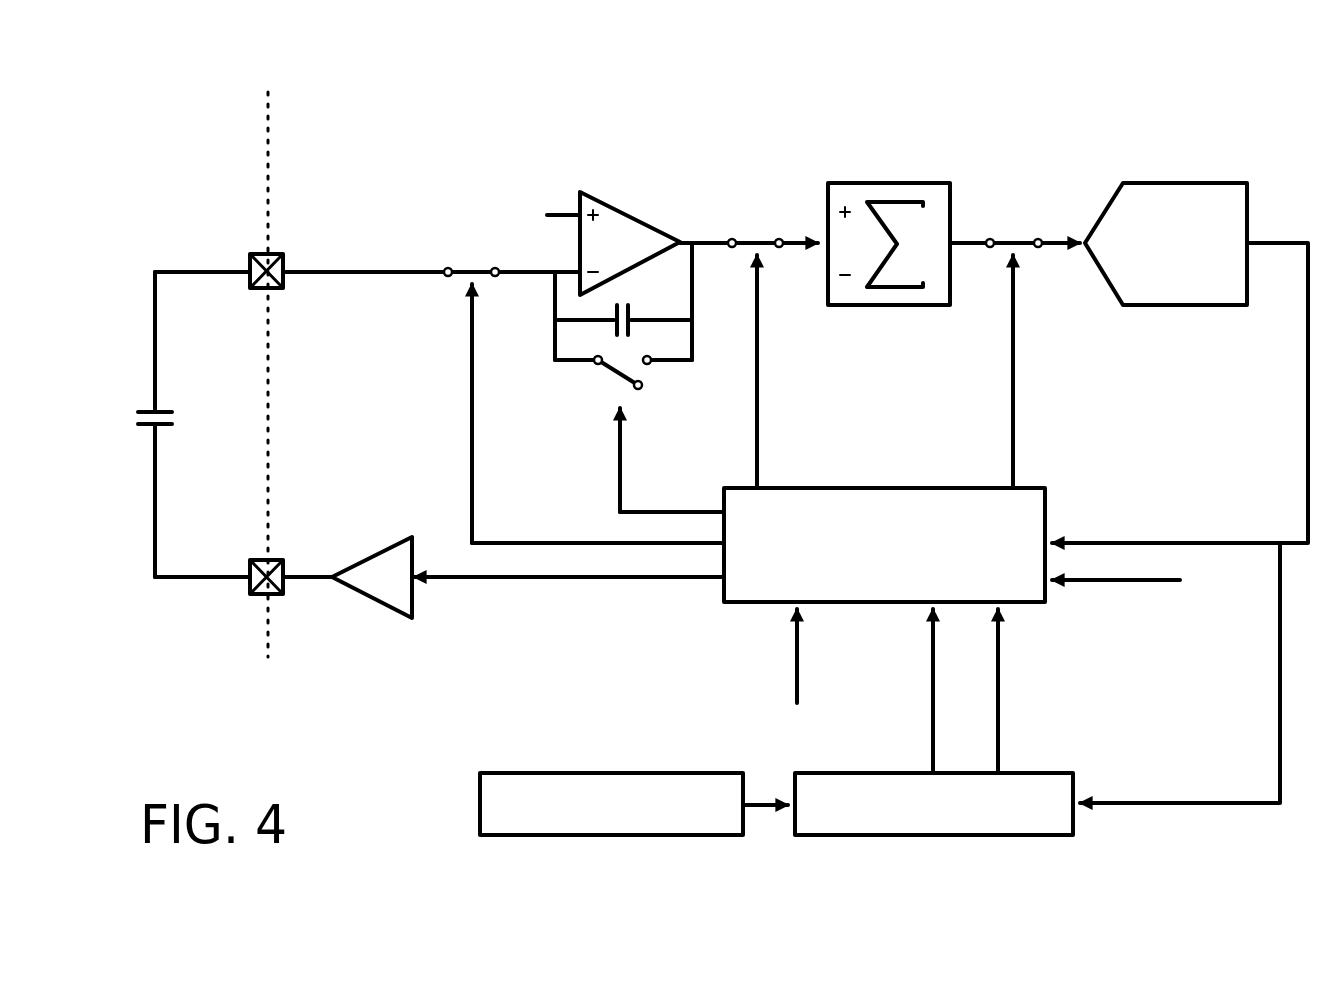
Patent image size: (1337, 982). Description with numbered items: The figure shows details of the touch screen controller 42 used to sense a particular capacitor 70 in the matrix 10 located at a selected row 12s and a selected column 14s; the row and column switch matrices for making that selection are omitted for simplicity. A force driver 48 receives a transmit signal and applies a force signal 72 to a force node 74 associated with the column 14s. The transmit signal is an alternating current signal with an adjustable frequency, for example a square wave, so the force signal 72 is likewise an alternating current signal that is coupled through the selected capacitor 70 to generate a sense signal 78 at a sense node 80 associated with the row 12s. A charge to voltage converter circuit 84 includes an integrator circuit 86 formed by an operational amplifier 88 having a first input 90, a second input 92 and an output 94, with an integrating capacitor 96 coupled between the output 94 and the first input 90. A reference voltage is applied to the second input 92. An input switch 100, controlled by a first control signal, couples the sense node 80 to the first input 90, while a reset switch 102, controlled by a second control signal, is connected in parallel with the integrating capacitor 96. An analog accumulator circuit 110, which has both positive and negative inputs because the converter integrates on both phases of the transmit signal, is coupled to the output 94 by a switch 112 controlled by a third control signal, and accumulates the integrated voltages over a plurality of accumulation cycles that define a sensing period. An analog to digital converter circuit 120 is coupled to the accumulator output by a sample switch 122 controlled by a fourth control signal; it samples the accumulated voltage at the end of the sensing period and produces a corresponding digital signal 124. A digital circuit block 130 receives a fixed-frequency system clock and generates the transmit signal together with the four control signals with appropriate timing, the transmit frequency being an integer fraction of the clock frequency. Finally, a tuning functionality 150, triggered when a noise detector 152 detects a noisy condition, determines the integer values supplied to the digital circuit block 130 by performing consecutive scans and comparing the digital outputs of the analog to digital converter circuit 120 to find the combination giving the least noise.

The matrix 10 is at (130, 230).
The selected row 12s is at (217, 262).
The selected column 14s is at (152, 522).
The touch screen controller 42 is at (416, 102).
The force driver 48 is at (375, 583).
The capacitor 70 is at (140, 425).
The force signal 72 is at (300, 582).
The force node 74 is at (279, 560).
The sense signal 78 is at (352, 262).
The sense node 80 is at (284, 291).
The charge to voltage (C2V) converter circuit 84 is at (523, 102).
The integrator circuit 86 is at (652, 195).
The operational amplifier 88 is at (617, 225).
The first input 90 is at (553, 278).
The second input 92 is at (553, 212).
The output 94 is at (698, 240).
The integrating capacitor 96 is at (632, 330).
The input switch 100 is at (463, 256).
The reset switch 102 is at (608, 378).
The analog accumulator circuit 110 is at (925, 188).
The switch 112 is at (768, 235).
The analog to digital (A/D) converter circuit 120 is at (1202, 183).
The sample switch 122 is at (1014, 230).
The digital signal 124 is at (1305, 412).
The digital circuit block 130 is at (863, 603).
The tuning functionality 150 is at (1065, 772).
The noise detector 152 is at (577, 772).